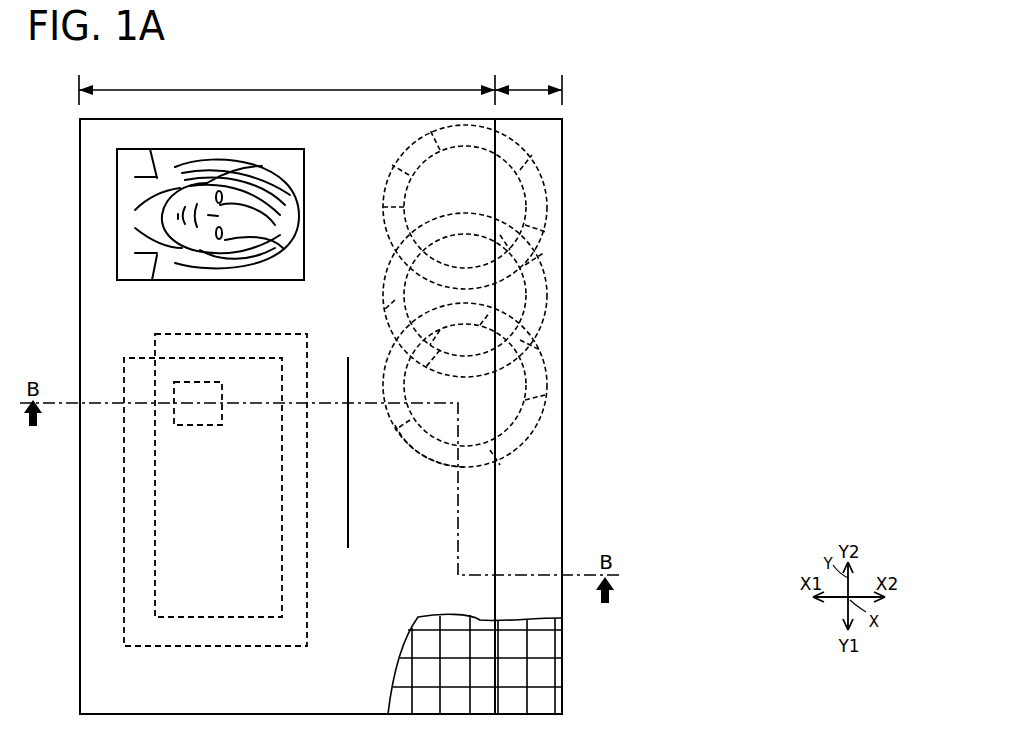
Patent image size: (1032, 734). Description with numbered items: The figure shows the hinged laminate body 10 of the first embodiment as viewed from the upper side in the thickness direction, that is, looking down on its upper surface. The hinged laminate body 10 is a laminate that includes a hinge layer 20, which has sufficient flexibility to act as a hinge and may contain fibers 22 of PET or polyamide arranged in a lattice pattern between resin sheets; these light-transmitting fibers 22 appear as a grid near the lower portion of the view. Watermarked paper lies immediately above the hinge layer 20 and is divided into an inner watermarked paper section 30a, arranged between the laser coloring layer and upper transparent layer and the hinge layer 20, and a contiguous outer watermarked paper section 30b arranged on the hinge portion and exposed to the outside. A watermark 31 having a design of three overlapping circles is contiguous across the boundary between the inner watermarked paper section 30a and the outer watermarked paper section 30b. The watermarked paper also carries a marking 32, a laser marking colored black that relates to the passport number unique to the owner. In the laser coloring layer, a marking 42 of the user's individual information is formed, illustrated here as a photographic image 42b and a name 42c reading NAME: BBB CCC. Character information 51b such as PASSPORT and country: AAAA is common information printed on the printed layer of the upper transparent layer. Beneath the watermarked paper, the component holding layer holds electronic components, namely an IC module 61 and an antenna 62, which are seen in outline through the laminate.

The hinged laminate body 10 is at (759, 100).
The hinge layer 20 is at (535, 139).
The fiber 22 is at (527, 645).
The inner watermarked paper section 30a is at (287, 84).
The outer watermarked paper section 30b is at (532, 60).
The watermark 31 is at (528, 193).
The marking 32 is at (508, 535).
The marking 42 is at (668, 295).
The photographic image 42b is at (282, 222).
The name 42c is at (357, 358).
The character information 51b is at (440, 428).
The IC module 61 is at (185, 380).
The antenna 62 is at (125, 485).